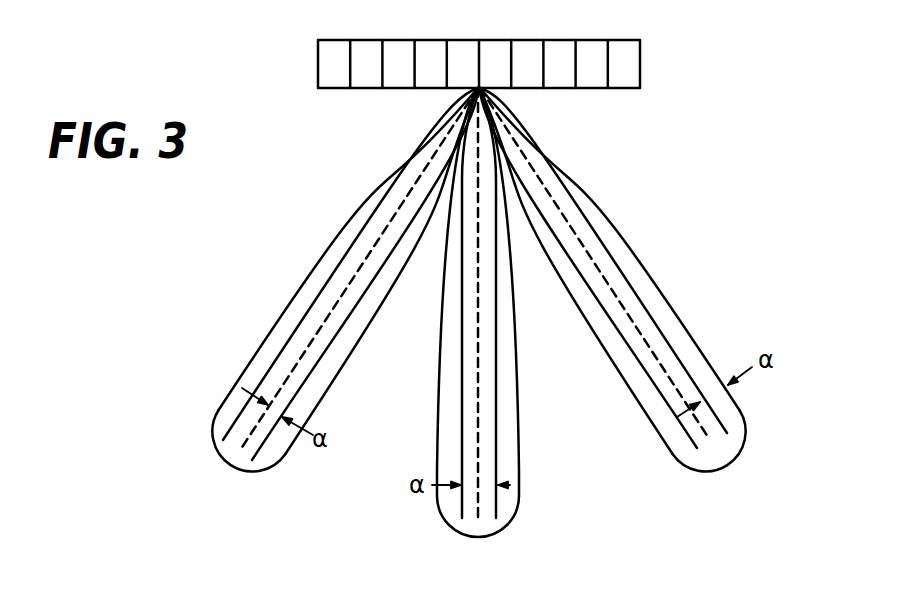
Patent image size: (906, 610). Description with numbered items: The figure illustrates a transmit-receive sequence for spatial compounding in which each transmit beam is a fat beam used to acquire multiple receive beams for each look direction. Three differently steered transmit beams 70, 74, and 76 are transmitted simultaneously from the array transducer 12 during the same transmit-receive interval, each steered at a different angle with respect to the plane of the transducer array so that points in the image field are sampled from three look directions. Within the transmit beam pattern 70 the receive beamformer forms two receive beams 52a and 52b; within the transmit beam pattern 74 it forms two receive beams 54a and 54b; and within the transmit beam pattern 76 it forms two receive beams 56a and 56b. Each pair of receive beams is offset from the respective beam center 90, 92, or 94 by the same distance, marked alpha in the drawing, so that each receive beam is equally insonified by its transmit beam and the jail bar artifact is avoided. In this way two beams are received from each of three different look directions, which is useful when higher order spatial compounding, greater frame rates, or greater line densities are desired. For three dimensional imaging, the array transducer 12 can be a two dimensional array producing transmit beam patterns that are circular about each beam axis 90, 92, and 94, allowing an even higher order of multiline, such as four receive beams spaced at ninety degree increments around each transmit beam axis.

The array transducer 12 is at (396, 90).
The transmit beam 70 is at (350, 218).
The receive beam 52a is at (285, 348).
The receive beam 52b is at (313, 372).
The beam center 90 is at (269, 450).
The transmit beam 74 is at (440, 336).
The receive beam 54a is at (462, 425).
The receive beam 54b is at (497, 465).
The beam center 92 is at (490, 530).
The transmit beam 76 is at (600, 345).
The receive beam 56a is at (662, 404).
The receive beam 56b is at (667, 300).
The beam center 94 is at (707, 452).